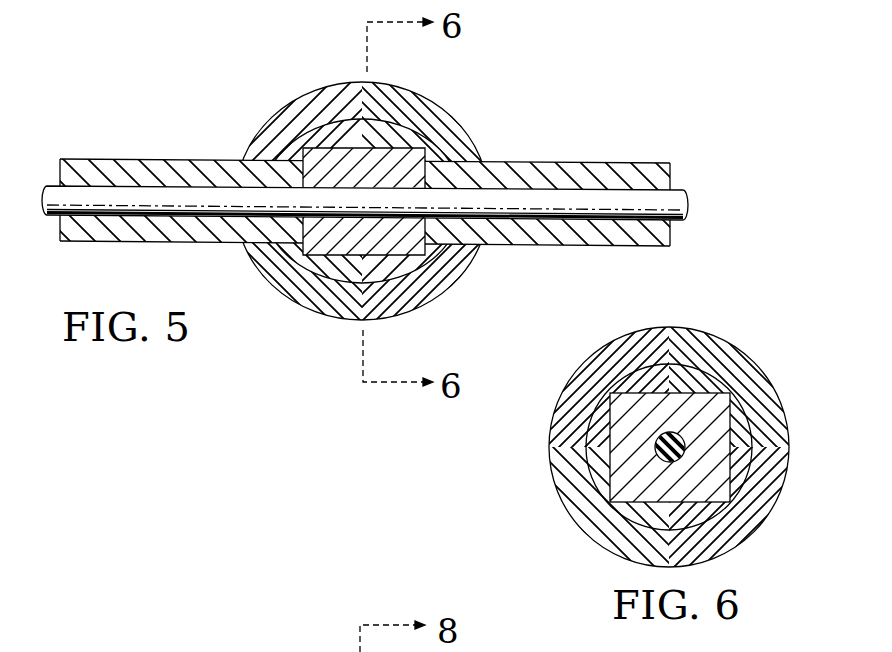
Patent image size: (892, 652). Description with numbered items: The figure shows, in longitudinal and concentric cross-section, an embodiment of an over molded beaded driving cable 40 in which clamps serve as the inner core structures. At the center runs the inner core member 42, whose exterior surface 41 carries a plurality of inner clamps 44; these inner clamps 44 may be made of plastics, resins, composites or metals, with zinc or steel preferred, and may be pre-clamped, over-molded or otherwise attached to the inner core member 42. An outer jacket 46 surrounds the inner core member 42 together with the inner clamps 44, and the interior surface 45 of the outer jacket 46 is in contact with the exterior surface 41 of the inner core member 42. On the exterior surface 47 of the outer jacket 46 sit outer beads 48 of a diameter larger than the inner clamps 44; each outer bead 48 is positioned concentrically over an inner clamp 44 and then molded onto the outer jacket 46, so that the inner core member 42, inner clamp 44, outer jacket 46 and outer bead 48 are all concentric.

In FIG. 5, the over molded beaded driving cable 40 is at (378, 203).
In FIG. 6, the over molded beaded driving cable 40 is at (659, 426).
In FIG. 5, the exterior surface of the inner core member 41 is at (673, 191).
In FIG. 5, the inner core member 42 is at (674, 201).
In FIG. 6, the inner core member 42 is at (628, 508).
In FIG. 5, the inner clamp 44 is at (310, 300).
In FIG. 6, the inner clamp 44 is at (741, 403).
In FIG. 5, the interior surface of the outer jacket 45 is at (78, 186).
In FIG. 5, the outer jacket 46 is at (571, 164).
In FIG. 6, the outer jacket 46 is at (706, 383).
In FIG. 5, the exterior surface of the outer jacket 47 is at (131, 242).
In FIG. 5, the outer bead 48 is at (320, 102).
In FIG. 6, the outer bead 48 is at (563, 470).